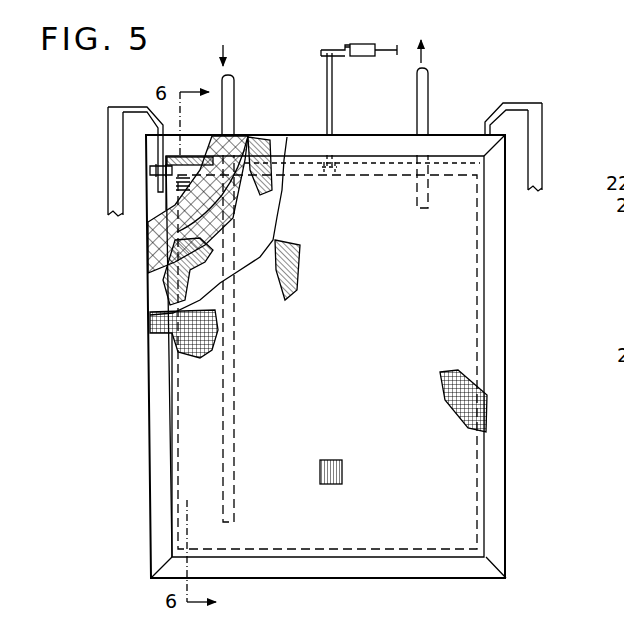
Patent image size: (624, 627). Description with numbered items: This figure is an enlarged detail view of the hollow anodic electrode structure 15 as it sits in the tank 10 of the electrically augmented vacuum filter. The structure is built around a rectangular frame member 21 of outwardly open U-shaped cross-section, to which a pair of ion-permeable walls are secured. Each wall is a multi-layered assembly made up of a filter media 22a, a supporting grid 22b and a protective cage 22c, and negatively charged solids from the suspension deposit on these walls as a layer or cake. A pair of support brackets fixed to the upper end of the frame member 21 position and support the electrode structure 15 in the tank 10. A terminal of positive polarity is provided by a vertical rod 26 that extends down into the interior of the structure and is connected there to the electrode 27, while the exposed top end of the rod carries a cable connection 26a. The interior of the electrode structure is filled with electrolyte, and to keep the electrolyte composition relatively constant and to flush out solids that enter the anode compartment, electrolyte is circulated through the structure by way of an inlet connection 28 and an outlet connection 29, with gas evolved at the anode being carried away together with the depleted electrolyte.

The tank 10 is at (112, 173).
The anodic electrode structure 15 is at (518, 356).
The frame member 21 is at (147, 151).
The filter media 22a is at (163, 287).
The supporting grid 22b is at (160, 243).
The protective cage 22c is at (175, 315).
The vertical rod 26 is at (327, 97).
The cable connection 26a is at (384, 57).
The electrode 27 is at (185, 178).
The inlet connection 28 is at (225, 108).
The outlet connection 29 is at (423, 102).